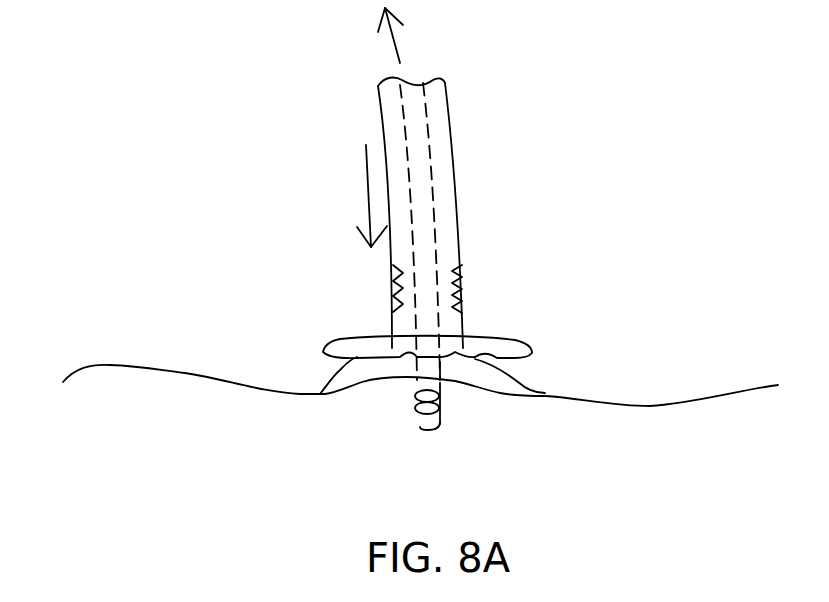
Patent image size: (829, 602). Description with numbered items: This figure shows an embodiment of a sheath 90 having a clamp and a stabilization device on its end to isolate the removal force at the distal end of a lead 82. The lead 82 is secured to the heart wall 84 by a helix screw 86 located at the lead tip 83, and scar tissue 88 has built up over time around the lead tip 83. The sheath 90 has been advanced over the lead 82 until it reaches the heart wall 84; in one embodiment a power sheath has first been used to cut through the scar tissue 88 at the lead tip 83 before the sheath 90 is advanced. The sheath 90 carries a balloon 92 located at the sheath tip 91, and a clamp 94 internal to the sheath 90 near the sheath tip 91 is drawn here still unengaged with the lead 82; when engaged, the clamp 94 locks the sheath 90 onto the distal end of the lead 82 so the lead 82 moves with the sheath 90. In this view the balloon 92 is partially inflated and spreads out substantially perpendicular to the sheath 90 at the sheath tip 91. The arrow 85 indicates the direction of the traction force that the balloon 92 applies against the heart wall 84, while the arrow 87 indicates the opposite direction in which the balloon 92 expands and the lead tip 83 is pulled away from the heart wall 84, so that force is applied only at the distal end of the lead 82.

The lead 82 is at (425, 137).
The lead tip 83 is at (410, 376).
The heart wall 84 is at (647, 407).
The arrow 85 is at (367, 192).
The helix screw 86 is at (432, 428).
The arrow 87 is at (393, 50).
The scar tissue 88 is at (528, 392).
The sheath 90 is at (458, 203).
The sheath tip 91 is at (456, 373).
The balloon 92 is at (500, 340).
The clamp 94 is at (393, 304).